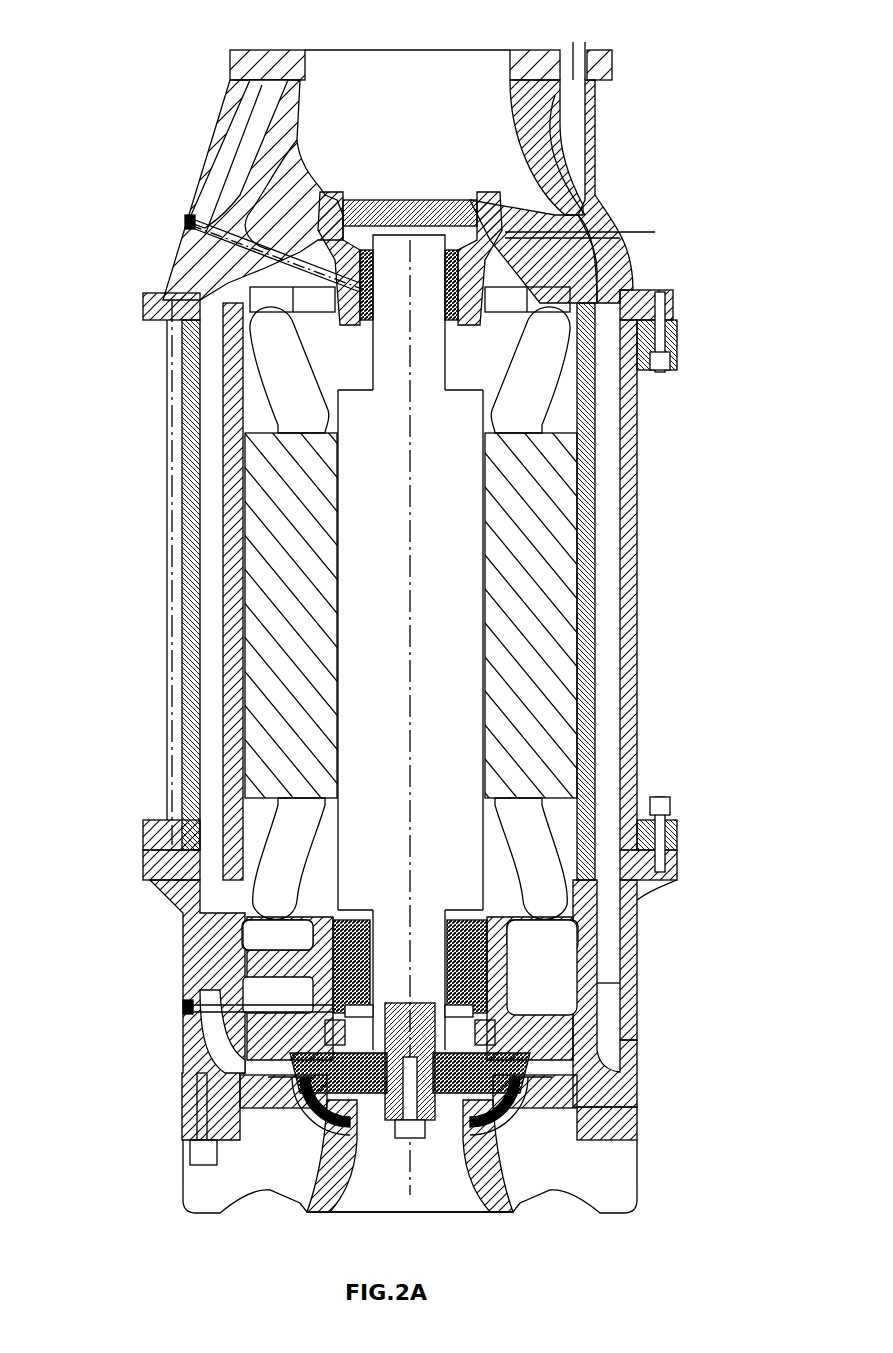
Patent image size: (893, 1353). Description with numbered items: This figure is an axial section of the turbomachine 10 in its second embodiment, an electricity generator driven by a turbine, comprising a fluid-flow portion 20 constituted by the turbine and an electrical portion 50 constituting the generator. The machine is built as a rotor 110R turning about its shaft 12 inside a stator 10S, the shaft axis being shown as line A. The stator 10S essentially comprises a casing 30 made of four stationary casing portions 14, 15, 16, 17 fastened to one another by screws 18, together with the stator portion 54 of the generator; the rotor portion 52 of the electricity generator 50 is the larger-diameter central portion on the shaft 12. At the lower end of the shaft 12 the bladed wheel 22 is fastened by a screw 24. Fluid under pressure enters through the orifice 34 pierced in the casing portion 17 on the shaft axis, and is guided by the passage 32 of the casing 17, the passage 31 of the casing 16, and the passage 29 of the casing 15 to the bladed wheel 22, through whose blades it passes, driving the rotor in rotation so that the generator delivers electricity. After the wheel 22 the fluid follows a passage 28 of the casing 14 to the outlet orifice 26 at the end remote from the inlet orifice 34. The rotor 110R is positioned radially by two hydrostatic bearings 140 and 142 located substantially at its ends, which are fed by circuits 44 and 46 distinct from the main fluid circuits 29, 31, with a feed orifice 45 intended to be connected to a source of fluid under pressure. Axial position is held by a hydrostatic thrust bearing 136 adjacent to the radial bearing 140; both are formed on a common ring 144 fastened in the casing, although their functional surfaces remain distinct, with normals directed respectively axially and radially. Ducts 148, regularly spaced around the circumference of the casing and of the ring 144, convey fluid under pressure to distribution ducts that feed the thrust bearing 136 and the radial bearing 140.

The turbomachine 10 is at (148, 612).
The stator 10S is at (640, 562).
The shaft 12 is at (382, 577).
The casing portion 14 is at (620, 1130).
The casing portion 15 is at (635, 960).
The casing portion 16 is at (640, 675).
The casing portion 17 is at (630, 262).
The screws 18 is at (672, 360).
The fluid-flow portion 20 is at (180, 1070).
The bladed wheel 22 is at (330, 1120).
The screw 24 is at (400, 1140).
The outlet orifice 26 is at (390, 1215).
The passage 28 is at (470, 1160).
The passage 29 is at (190, 1005).
The casing 30 is at (645, 748).
The passage 31 is at (235, 553).
The passage 32 is at (510, 85).
The orifice 34 is at (478, 50).
The feed circuit 44 is at (165, 378).
The feed orifice 45 is at (255, 70).
The feed circuit 46 is at (305, 245).
The electrical portion 50 is at (150, 460).
The rotor portion 52 is at (462, 628).
The stator portion 54 is at (555, 490).
The rotor 110R is at (350, 380).
The hydrostatic thrust bearing 136 is at (480, 920).
The hydrostatic bearing 140 is at (435, 955).
The hydrostatic bearing 142 is at (470, 310).
The common ring 144 is at (440, 985).
The ducts 148 is at (295, 970).
The axis A is at (412, 520).